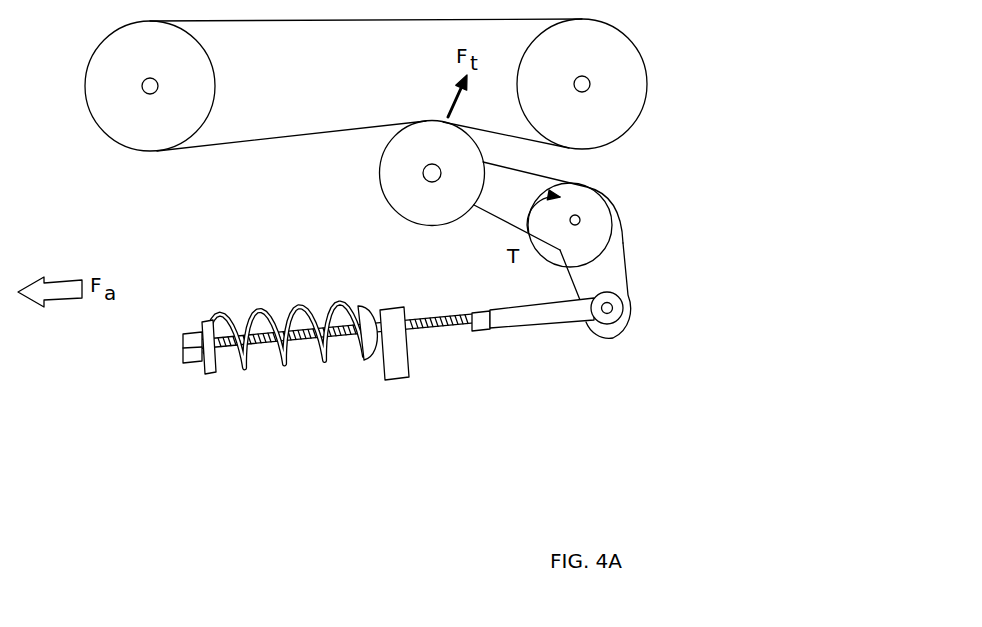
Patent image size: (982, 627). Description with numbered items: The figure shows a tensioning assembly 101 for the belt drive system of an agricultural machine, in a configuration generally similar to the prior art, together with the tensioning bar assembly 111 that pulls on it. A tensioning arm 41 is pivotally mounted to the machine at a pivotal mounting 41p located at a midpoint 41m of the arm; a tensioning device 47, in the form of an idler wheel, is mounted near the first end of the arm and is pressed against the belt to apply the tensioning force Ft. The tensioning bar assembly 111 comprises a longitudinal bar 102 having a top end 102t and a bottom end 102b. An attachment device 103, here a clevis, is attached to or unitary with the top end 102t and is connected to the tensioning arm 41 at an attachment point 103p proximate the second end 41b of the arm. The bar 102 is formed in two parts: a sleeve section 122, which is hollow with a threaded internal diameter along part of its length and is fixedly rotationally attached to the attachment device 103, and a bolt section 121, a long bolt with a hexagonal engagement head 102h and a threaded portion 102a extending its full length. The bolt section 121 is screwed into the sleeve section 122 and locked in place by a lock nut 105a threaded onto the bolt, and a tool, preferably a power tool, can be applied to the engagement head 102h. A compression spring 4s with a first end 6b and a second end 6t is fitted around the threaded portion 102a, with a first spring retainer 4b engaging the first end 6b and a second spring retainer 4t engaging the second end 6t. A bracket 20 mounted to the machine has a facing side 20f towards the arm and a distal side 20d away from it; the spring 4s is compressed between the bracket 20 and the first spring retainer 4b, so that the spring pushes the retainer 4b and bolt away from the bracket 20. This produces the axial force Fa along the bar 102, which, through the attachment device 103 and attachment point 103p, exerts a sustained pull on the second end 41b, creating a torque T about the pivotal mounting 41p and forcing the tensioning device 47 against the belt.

The tensioning device 47 is at (422, 142).
The tensioning arm 41 is at (557, 180).
The midpoint 41m is at (608, 198).
The pivotal mounting 41p is at (580, 220).
The second end 41b is at (626, 297).
The attachment point 103p is at (607, 308).
The attachment device 103 is at (603, 340).
The longitudinal bar 102 is at (438, 278).
The engagement head 102h is at (183, 340).
The bottom end 102b is at (197, 382).
The threaded portion 102a is at (298, 350).
The top end 102t is at (560, 330).
The first spring retainer 4b is at (207, 317).
The compression spring 4s is at (298, 310).
The first end 6b is at (247, 318).
The second end 6t is at (342, 297).
The second spring retainer 4t is at (372, 303).
The bracket 20 is at (390, 380).
The distal side 20d is at (372, 360).
The facing side 20f is at (416, 362).
The bolt section 121 is at (232, 367).
The sleeve section 122 is at (547, 330).
The lock nut 105a is at (480, 331).
The tensioning assembly 101 is at (731, 402).
The tensioning bar assembly 111 is at (262, 502).